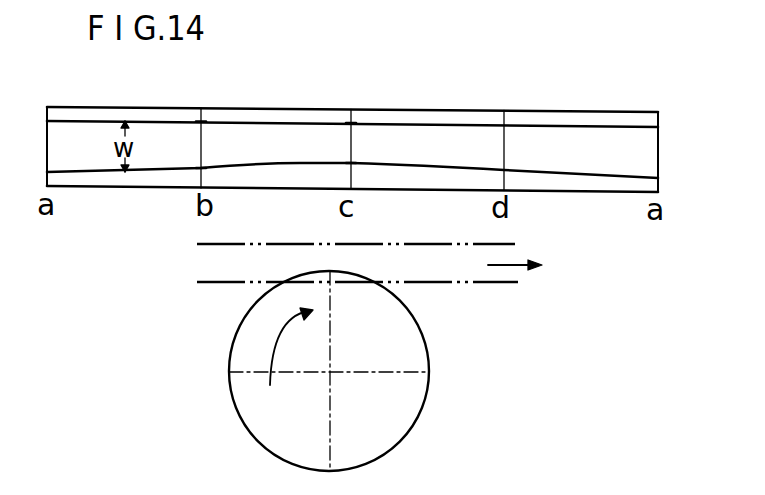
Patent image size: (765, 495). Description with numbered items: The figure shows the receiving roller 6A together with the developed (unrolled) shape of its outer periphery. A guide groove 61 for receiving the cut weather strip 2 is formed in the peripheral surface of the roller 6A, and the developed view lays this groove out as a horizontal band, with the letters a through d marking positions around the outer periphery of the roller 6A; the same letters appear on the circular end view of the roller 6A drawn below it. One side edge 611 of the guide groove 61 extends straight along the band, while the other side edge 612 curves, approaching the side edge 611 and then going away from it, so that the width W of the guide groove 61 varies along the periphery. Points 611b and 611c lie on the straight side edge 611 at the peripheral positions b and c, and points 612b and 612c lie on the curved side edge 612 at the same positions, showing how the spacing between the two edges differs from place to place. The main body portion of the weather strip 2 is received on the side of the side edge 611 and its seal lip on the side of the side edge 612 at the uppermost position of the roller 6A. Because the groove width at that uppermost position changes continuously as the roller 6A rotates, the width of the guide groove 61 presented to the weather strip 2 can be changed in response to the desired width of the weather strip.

The guide groove 61 is at (283, 143).
The side edge 611 is at (160, 122).
The point b on edge line 611 611b is at (203, 122).
The point c on edge line 611 611c is at (352, 123).
The side edge 612 is at (285, 167).
The point b on edge line 612 612b is at (198, 172).
The point c on edge line 612 612c is at (352, 166).
The weather strip 2 is at (453, 290).
The receiving roller 6A is at (333, 104).